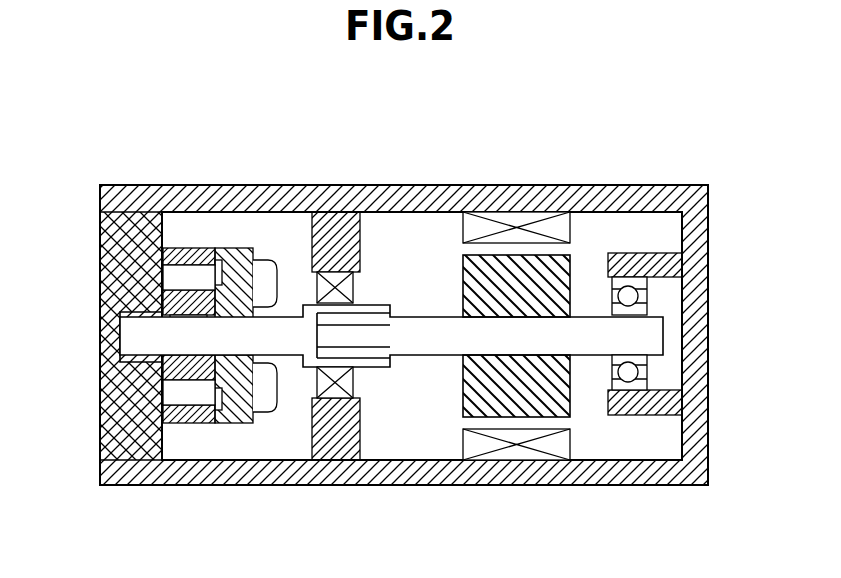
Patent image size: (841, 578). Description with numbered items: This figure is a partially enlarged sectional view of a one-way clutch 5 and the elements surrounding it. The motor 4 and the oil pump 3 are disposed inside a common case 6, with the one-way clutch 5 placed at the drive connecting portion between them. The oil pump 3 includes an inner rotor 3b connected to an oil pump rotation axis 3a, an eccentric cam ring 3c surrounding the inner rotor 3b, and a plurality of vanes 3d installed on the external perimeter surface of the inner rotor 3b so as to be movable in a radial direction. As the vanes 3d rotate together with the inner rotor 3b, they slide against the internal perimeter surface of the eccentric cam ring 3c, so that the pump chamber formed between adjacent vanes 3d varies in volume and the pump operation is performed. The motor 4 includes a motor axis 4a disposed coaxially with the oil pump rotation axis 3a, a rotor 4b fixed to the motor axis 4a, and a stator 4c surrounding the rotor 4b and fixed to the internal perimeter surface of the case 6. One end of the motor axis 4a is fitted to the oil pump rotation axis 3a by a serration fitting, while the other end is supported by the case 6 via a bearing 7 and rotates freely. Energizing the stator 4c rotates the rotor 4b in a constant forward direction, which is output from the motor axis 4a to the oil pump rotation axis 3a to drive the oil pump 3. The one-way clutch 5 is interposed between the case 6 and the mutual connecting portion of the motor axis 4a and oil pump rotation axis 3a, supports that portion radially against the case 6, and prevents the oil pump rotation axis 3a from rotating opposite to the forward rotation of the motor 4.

The oil pump 3 is at (156, 394).
The oil pump rotation axis 3a is at (130, 337).
The inner rotor 3b is at (168, 373).
The eccentric cam ring 3c is at (168, 413).
The vanes 3d is at (168, 395).
The motor 4 is at (506, 376).
The motor axis 4a is at (650, 340).
The rotor 4b is at (463, 388).
The stator 4c is at (463, 437).
The one-way clutch 5 is at (316, 381).
The case 6 is at (418, 186).
The bearing 7 is at (640, 292).